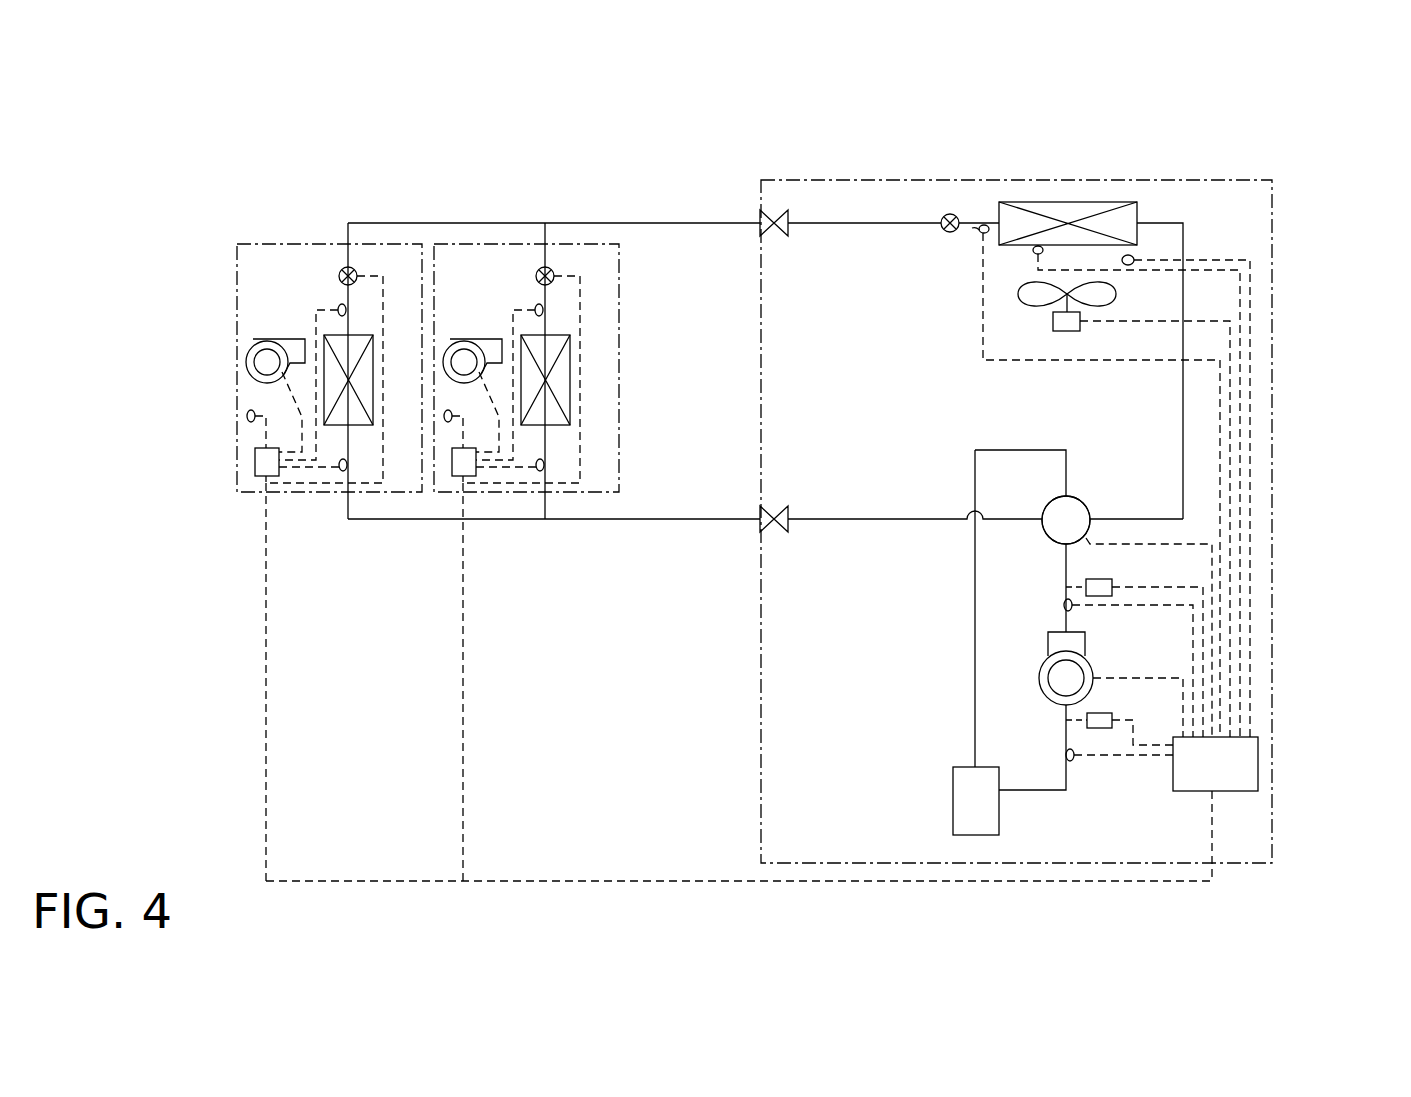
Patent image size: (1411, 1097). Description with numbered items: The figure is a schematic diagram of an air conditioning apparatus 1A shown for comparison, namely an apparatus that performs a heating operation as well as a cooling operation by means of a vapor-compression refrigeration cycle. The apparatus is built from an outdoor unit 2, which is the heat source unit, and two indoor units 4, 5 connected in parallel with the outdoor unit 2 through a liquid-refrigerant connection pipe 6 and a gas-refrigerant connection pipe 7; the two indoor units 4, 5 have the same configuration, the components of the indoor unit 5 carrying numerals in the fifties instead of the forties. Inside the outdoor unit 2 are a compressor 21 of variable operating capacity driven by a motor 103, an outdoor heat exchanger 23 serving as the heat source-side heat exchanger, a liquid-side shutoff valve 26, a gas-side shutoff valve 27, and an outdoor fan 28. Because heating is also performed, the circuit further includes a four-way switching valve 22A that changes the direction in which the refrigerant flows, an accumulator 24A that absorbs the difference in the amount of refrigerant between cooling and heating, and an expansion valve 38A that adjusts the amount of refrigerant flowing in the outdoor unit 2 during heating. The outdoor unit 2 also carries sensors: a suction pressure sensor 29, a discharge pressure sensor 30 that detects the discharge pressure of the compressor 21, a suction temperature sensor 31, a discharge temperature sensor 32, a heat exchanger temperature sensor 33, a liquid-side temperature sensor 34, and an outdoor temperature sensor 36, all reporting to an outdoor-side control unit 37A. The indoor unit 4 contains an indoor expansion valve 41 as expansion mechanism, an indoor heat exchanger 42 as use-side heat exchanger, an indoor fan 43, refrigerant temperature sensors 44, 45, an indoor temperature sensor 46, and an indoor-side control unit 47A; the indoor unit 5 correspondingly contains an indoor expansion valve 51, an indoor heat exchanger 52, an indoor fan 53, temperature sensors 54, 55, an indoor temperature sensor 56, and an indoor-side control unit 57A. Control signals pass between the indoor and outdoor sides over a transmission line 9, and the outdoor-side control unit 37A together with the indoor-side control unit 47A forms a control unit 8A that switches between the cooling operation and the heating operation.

The air conditioning apparatus 1A is at (1314, 135).
The outdoor unit 2 is at (1232, 180).
The indoor unit 4 is at (416, 244).
The indoor unit 5 is at (608, 244).
The liquid-refrigerant connection pipe 6 is at (675, 222).
The gas-refrigerant connection pipe 7 is at (655, 520).
The control unit 8A is at (620, 870).
The transmission line 9 is at (537, 880).
The compressor 21 is at (1046, 641).
The four-way switching valve 22A is at (1046, 505).
The outdoor heat exchanger 23 is at (1087, 202).
The accumulator 24A is at (980, 767).
The liquid-side shutoff valve 26 is at (785, 210).
The gas-side shutoff valve 27 is at (788, 532).
The outdoor fan 28 is at (1014, 300).
The suction pressure sensor 29 is at (1100, 712).
The discharge pressure sensor 30 is at (1098, 580).
The suction temperature sensor 31 is at (1075, 762).
The discharge temperature sensor 32 is at (1073, 612).
The heat exchanger temperature sensor 33 is at (1034, 254).
The liquid-side temperature sensor 34 is at (983, 236).
The outdoor temperature sensor 36 is at (1134, 258).
The outdoor-side control unit 37A is at (1230, 791).
The expansion valve 38A is at (943, 216).
The indoor expansion valve 41 is at (357, 273).
The indoor heat exchanger 42 is at (372, 338).
The indoor fan 43 is at (268, 335).
The temperature sensor 44 is at (341, 305).
The temperature sensor 45 is at (343, 472).
The indoor temperature sensor 46 is at (250, 423).
The indoor-side control unit 47A is at (262, 478).
The indoor expansion valve 51 is at (554, 273).
The indoor heat exchanger 52 is at (569, 338).
The indoor fan 53 is at (465, 335).
The temperature sensor 54 is at (538, 305).
The temperature sensor 55 is at (540, 472).
The indoor temperature sensor 56 is at (447, 423).
The indoor-side control unit 57A is at (459, 478).
The motor 103 is at (1047, 684).